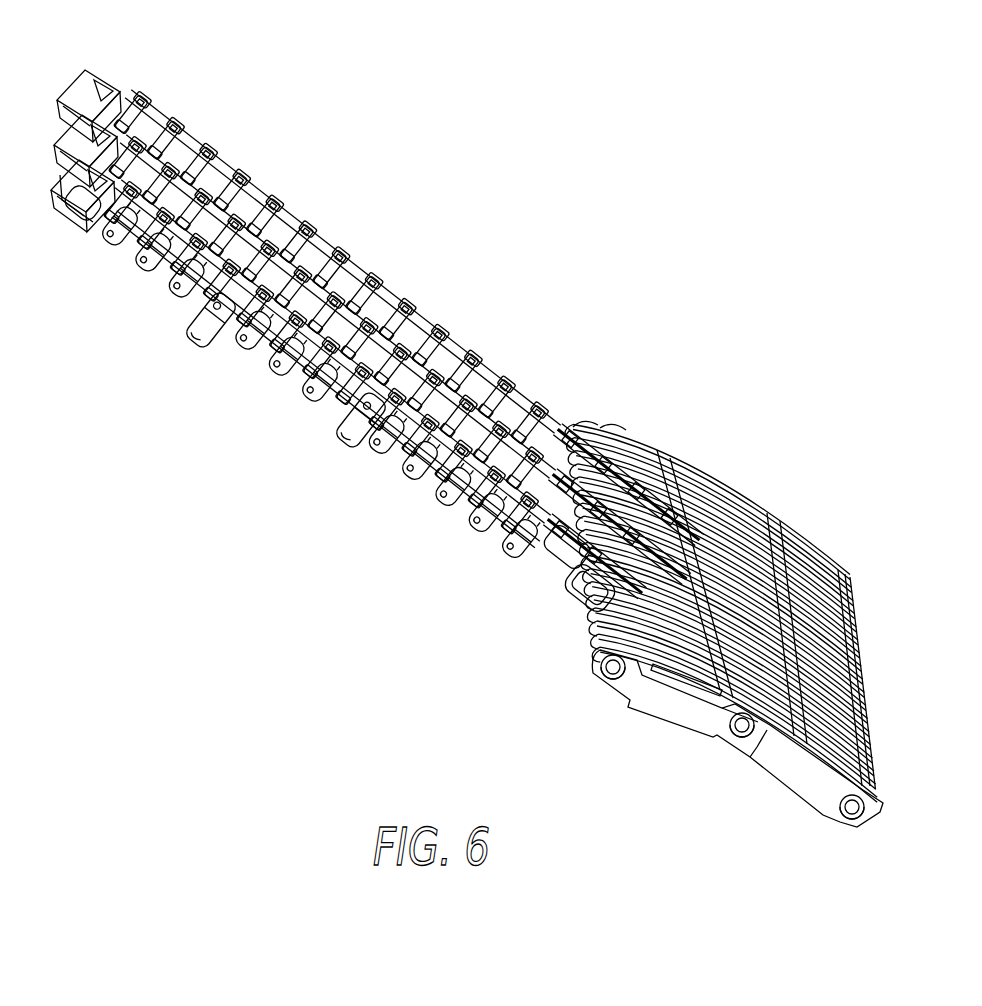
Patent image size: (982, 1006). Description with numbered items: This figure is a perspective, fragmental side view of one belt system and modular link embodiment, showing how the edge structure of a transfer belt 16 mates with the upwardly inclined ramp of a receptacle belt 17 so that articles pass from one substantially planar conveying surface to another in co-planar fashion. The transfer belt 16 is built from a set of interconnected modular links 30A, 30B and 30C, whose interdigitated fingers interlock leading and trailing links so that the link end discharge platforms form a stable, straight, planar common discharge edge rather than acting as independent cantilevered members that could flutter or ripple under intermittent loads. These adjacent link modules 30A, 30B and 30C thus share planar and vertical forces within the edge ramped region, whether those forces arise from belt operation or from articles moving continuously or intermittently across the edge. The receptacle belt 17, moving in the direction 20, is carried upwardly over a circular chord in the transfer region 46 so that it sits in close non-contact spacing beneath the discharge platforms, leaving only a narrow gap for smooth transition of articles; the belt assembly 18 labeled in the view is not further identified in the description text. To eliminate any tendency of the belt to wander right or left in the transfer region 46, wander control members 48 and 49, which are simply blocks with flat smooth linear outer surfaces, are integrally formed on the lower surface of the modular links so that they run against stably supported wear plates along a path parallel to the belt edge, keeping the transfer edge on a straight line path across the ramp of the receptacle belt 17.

The transfer belt 16 is at (363, 320).
The receptacle belt 17 is at (697, 470).
The carrier strip lattice 18 is at (401, 353).
The direction of receptacle belt movement 20 is at (712, 617).
The modular link 30A is at (60, 96).
The modular link 30B is at (67, 149).
The modular link 30C is at (80, 207).
The transfer region 46 is at (570, 600).
The wander control member 48 is at (206, 330).
The wander control member 49 is at (355, 448).